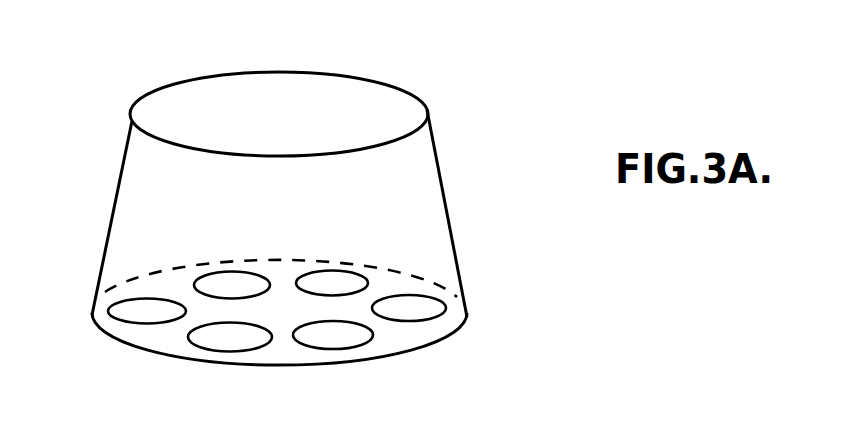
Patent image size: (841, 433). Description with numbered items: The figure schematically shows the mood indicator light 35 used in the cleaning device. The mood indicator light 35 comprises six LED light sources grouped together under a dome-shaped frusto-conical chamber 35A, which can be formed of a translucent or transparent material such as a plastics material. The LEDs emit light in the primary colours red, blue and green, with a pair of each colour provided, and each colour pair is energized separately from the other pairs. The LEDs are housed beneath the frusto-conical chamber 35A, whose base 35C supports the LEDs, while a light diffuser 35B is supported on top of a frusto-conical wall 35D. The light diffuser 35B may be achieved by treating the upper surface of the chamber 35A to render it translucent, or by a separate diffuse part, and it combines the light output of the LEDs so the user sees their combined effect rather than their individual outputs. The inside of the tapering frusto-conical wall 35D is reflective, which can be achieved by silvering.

The mood indicator light 35 is at (453, 215).
The frusto-conical chamber 35A is at (325, 226).
The light diffuser 35B is at (342, 108).
The base 35C is at (280, 343).
The frusto-conical wall 35D is at (108, 226).